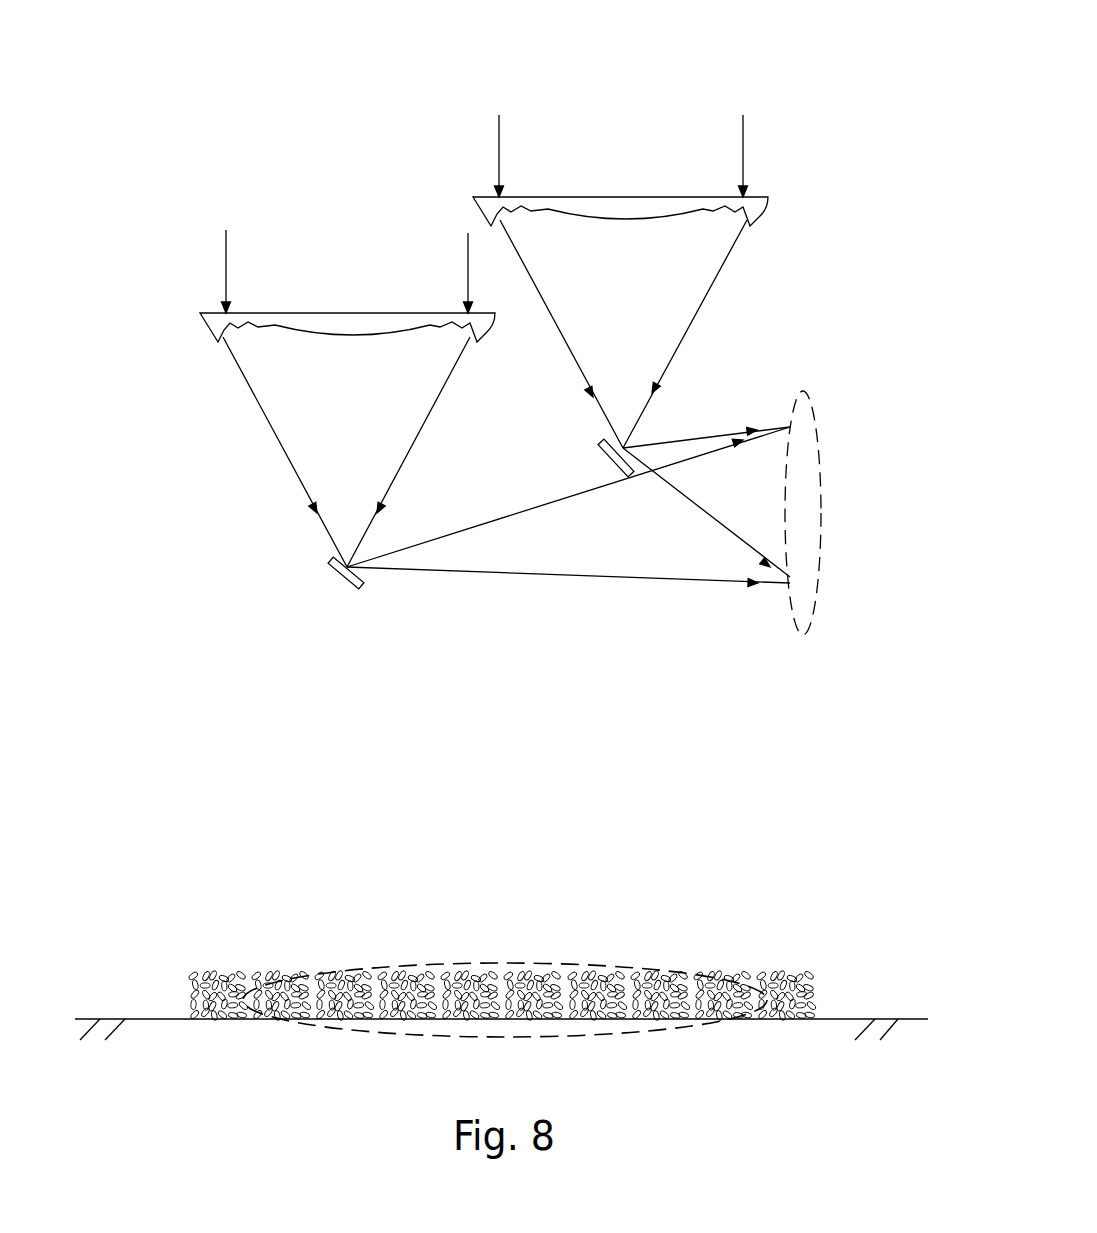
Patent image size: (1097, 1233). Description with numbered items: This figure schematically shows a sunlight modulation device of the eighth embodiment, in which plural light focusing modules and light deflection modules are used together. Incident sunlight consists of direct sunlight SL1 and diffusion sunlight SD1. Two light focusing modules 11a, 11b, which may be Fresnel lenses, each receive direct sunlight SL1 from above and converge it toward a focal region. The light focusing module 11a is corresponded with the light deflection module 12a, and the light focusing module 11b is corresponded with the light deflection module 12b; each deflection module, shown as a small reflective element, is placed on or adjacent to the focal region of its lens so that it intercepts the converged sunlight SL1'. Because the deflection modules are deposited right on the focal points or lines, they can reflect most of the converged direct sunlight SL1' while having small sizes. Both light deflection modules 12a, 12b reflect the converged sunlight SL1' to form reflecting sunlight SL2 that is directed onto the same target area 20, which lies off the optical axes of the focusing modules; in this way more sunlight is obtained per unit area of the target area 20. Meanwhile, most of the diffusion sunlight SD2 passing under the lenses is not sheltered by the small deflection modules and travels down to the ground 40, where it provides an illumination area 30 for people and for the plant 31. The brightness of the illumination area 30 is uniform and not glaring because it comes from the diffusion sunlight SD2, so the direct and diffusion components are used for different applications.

The light focusing module 11a is at (768, 200).
The light focusing module 11b is at (200, 313).
The light deflection module 12a is at (600, 440).
The light deflection module 12b is at (337, 568).
The target area 20 is at (822, 458).
The illumination area 30 is at (578, 1035).
The plant 31 is at (533, 977).
The ground 40 is at (850, 1019).
The diffusion sunlight SD1 is at (400, 100).
The diffusion sunlight SD2 is at (223, 847).
The direct sunlight SL1 is at (441, 214).
The converged direct sunlight SL1' is at (500, 393).
The reflecting sunlight SL2 is at (688, 440).